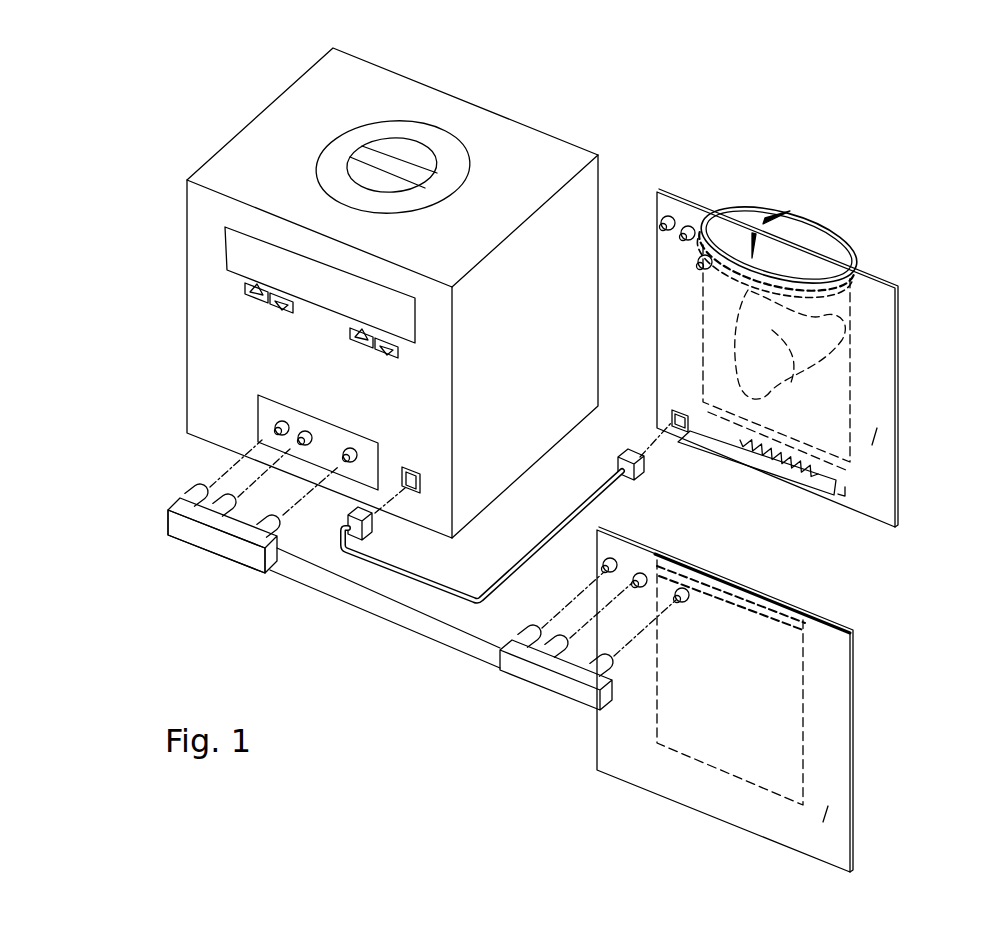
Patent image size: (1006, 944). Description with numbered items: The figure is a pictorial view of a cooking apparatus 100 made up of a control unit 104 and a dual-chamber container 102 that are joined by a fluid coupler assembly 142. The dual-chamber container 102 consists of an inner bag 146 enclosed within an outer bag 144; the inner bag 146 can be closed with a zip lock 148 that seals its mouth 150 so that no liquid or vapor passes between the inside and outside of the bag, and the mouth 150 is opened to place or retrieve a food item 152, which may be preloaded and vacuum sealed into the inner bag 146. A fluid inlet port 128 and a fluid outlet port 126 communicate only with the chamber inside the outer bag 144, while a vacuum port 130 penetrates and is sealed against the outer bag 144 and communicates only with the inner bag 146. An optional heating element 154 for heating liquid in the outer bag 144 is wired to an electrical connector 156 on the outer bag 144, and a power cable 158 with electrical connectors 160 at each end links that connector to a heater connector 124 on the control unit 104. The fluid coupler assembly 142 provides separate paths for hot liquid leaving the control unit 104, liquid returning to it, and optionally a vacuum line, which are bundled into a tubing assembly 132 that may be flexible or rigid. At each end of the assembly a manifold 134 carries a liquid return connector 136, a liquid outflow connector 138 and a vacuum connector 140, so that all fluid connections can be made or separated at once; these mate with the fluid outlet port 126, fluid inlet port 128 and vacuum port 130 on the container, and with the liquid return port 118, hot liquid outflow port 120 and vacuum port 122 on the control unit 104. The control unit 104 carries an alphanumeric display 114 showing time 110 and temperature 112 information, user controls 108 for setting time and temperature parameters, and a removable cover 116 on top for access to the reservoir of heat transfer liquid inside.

The apparatus 100 is at (700, 112).
The dual-chamber container 102 is at (895, 288).
The control unit 104 is at (187, 213).
The user controls 108 is at (247, 297).
The time 110 is at (248, 242).
The temperature 112 is at (365, 287).
The alphanumeric display 114 is at (233, 225).
The removable cover 116 is at (410, 122).
The liquid return port 118 is at (280, 427).
The hot liquid outflow port 120 is at (303, 438).
The vacuum port 122 is at (347, 462).
The heater connector 124 is at (420, 480).
The fluid outlet port 126 is at (668, 217).
The fluid inlet port 128 is at (688, 227).
The vacuum port 130 is at (702, 267).
The tubing assembly 132 is at (363, 602).
The manifold 134 is at (200, 547).
The liquid return connector 136 is at (197, 490).
The liquid outflow connector 138 is at (218, 500).
The vacuum connector 140 is at (260, 557).
The fluid coupler assembly 142 is at (170, 510).
The outer bag 144 is at (877, 430).
The inner bag 146 is at (853, 365).
The zip lock 148 is at (823, 228).
The mouth 150 is at (762, 240).
The food item 152 is at (842, 322).
The heating element 154 is at (853, 487).
The electrical connector 156 is at (680, 407).
The power cable 158 is at (578, 512).
The electrical connectors 160 is at (377, 535).